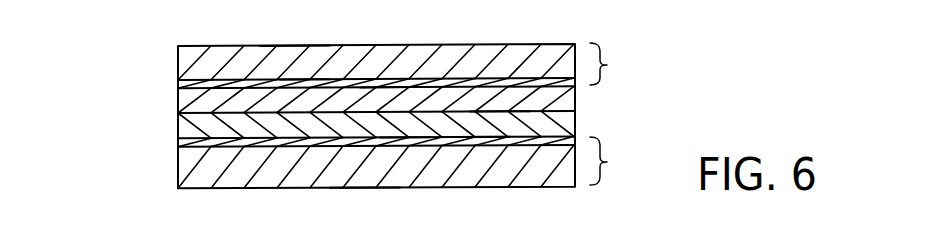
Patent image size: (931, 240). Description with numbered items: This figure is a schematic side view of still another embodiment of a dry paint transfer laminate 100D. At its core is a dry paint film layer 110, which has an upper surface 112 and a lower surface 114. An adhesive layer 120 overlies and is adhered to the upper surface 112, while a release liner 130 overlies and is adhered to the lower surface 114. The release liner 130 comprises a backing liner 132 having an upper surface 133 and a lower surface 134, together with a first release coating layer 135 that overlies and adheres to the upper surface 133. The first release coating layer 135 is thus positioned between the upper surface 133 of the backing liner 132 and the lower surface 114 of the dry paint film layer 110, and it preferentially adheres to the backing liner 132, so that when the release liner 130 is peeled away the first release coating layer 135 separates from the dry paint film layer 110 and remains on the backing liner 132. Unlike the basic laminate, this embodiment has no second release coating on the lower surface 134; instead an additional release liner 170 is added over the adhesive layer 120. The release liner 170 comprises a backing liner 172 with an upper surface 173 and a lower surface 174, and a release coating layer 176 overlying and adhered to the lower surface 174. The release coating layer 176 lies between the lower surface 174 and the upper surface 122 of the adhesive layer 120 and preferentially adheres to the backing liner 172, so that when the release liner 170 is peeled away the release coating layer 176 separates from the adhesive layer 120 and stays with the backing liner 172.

The dry paint transfer laminate 100D is at (130, 67).
The backing liner 172 is at (178, 62).
The upper surface 173 is at (293, 45).
The release coating layer 176 is at (178, 83).
The lower surface 174 is at (303, 82).
The upper surface 122 is at (385, 82).
The adhesive layer 120 is at (575, 100).
The dry paint film layer 110 is at (575, 127).
The upper surface 112 is at (498, 108).
The upper surface 133 is at (407, 130).
The lower surface 114 is at (482, 140).
The first release coating layer 135 is at (178, 144).
The backing liner 132 is at (178, 168).
The lower surface 134 is at (360, 188).
The release liner 170 is at (607, 65).
The release liner 130 is at (607, 162).